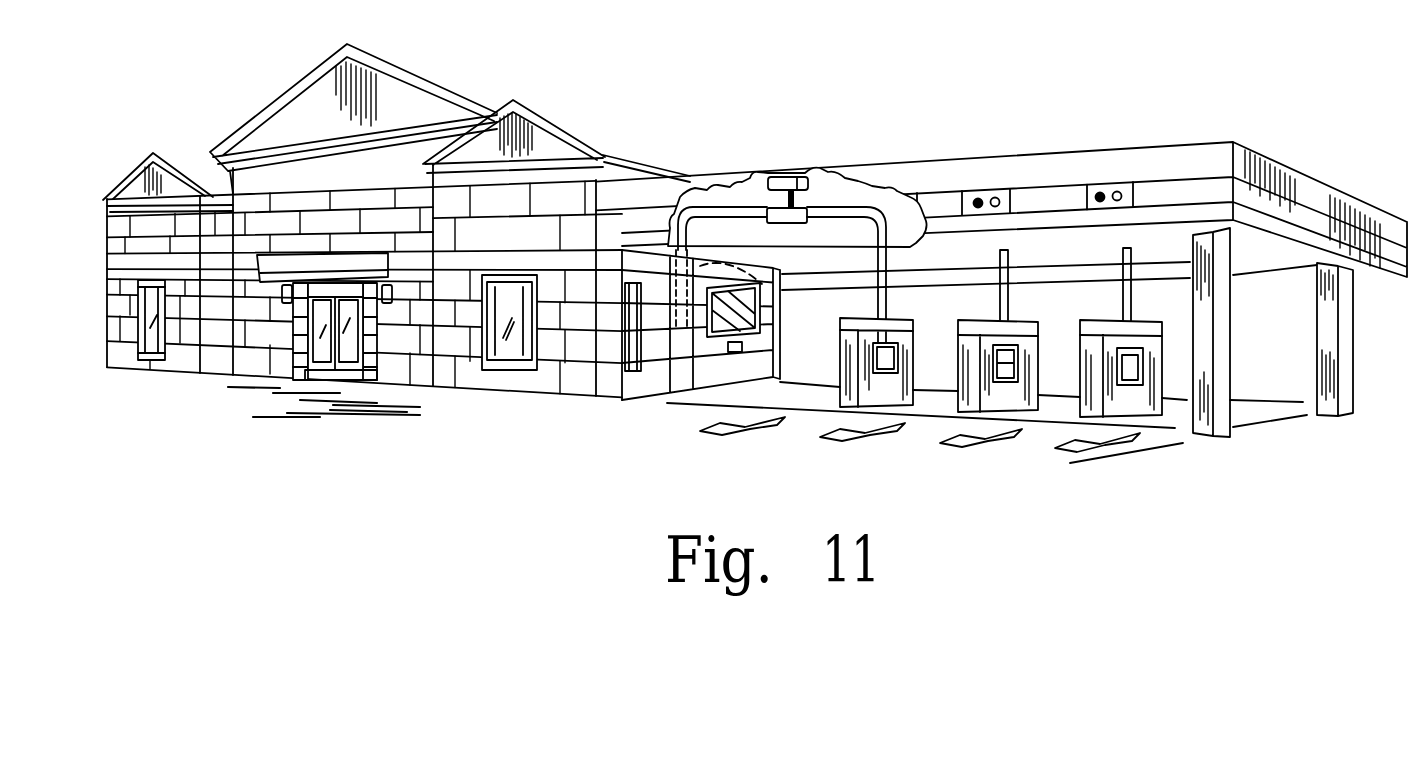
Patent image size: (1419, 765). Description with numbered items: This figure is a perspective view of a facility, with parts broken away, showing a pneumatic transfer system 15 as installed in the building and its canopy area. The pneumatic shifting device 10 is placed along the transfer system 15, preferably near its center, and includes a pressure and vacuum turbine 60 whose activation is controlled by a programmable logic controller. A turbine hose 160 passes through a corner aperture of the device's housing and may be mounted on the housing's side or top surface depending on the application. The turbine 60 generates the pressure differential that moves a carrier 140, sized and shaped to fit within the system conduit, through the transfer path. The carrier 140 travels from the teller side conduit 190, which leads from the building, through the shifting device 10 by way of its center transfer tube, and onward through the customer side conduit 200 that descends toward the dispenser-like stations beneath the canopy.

The pneumatic shifting device 10 is at (715, 146).
The pneumatic transfer system 15 is at (798, 148).
The pressure and vacuum turbine 60 is at (783, 175).
The turbine hose 160 is at (812, 196).
The customer side conduit 200 is at (889, 307).
The carrier 140 is at (680, 334).
The teller side conduit 190 is at (766, 301).